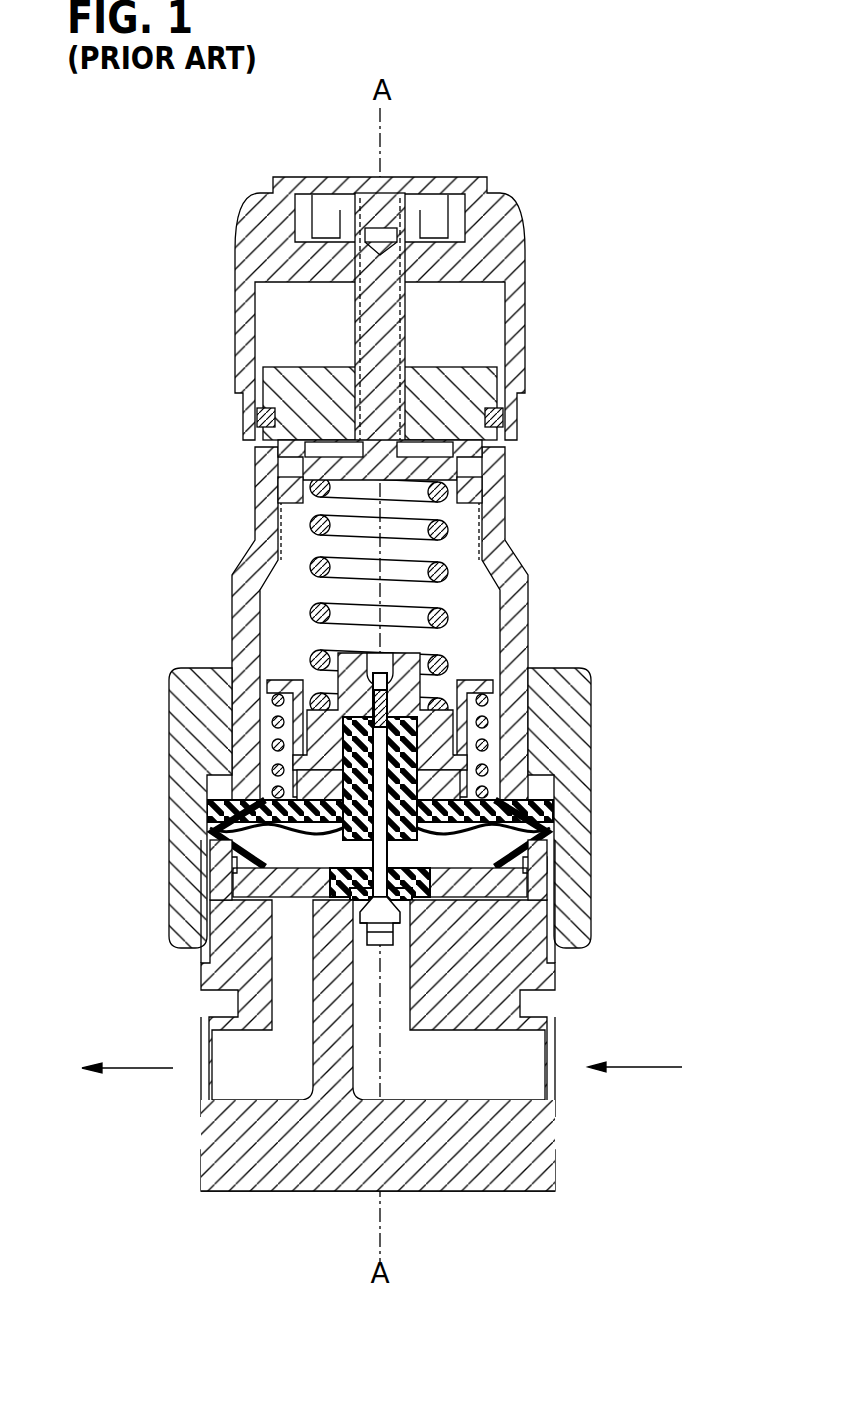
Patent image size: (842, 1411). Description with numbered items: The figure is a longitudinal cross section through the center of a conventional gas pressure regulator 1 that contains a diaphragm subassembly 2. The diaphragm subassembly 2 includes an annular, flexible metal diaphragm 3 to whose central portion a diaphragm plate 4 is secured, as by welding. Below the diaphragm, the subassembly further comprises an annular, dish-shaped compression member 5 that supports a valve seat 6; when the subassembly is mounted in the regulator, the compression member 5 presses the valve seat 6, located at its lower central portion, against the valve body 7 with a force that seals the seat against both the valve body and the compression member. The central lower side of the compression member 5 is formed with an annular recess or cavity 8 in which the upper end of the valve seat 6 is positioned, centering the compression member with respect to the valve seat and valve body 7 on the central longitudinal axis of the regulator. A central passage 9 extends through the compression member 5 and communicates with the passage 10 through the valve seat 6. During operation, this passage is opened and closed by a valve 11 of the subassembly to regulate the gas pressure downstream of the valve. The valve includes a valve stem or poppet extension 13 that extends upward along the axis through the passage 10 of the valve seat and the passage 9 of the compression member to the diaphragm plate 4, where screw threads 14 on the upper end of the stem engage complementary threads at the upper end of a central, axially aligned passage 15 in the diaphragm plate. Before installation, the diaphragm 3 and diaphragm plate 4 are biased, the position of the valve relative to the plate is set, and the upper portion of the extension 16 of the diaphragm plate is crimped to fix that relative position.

The gas pressure regulator 1 is at (383, 740).
The diaphragm subassembly 2 is at (455, 870).
The flexible metal diaphragm 3 is at (500, 805).
The diaphragm plate 4 is at (420, 800).
The compression member 5 is at (195, 912).
The valve seat 6 is at (405, 912).
The valve body 7 is at (491, 1176).
The annular recess or cavity 8 is at (300, 935).
The central passage 9 is at (240, 832).
The passage 10 is at (440, 878).
The valve 11 is at (405, 905).
The valve stem or poppet extension 13 is at (300, 745).
The screw threads 14 is at (345, 748).
The axially aligned passage 15 is at (415, 782).
The extension of the diaphragm plate 16 is at (392, 695).